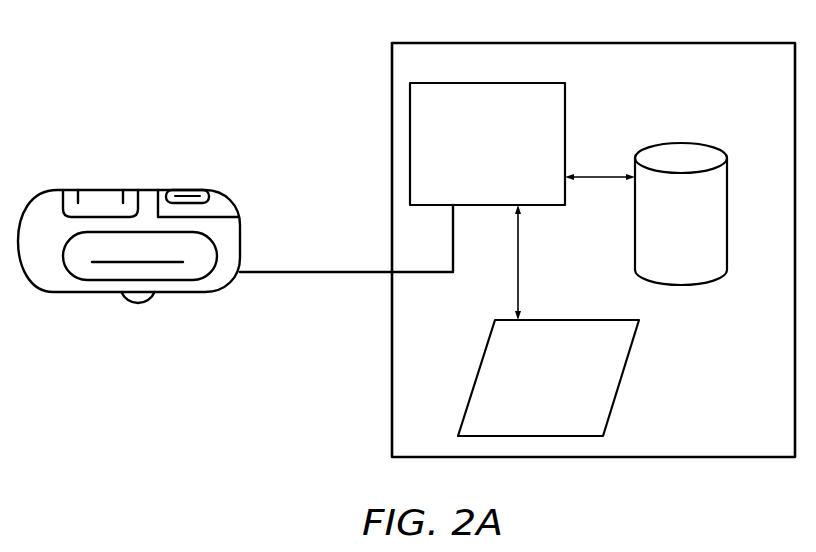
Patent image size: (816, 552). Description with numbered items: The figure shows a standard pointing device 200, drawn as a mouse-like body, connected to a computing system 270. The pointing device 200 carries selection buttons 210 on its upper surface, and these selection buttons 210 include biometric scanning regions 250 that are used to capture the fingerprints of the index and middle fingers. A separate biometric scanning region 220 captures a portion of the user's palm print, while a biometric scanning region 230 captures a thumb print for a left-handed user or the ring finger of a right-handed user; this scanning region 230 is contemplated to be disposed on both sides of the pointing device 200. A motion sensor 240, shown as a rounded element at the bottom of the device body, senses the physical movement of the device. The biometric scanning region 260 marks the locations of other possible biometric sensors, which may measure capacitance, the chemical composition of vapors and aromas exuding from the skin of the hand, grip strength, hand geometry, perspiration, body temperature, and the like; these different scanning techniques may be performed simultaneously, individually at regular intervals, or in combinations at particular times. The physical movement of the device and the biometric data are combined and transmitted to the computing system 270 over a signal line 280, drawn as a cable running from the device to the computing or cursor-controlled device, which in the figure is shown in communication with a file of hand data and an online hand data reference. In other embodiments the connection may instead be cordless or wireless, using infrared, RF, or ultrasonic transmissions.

The pointing device 200 is at (256, 93).
The selection buttons 210 is at (220, 208).
The biometric scanning region 220 is at (100, 199).
The biometric scanning region 230 is at (98, 273).
The motion sensor 240 is at (142, 303).
The biometric scanning regions 250 is at (183, 195).
The biometric scanning region 260 is at (182, 192).
The computing system 270 is at (632, 43).
The signal line 280 is at (313, 272).